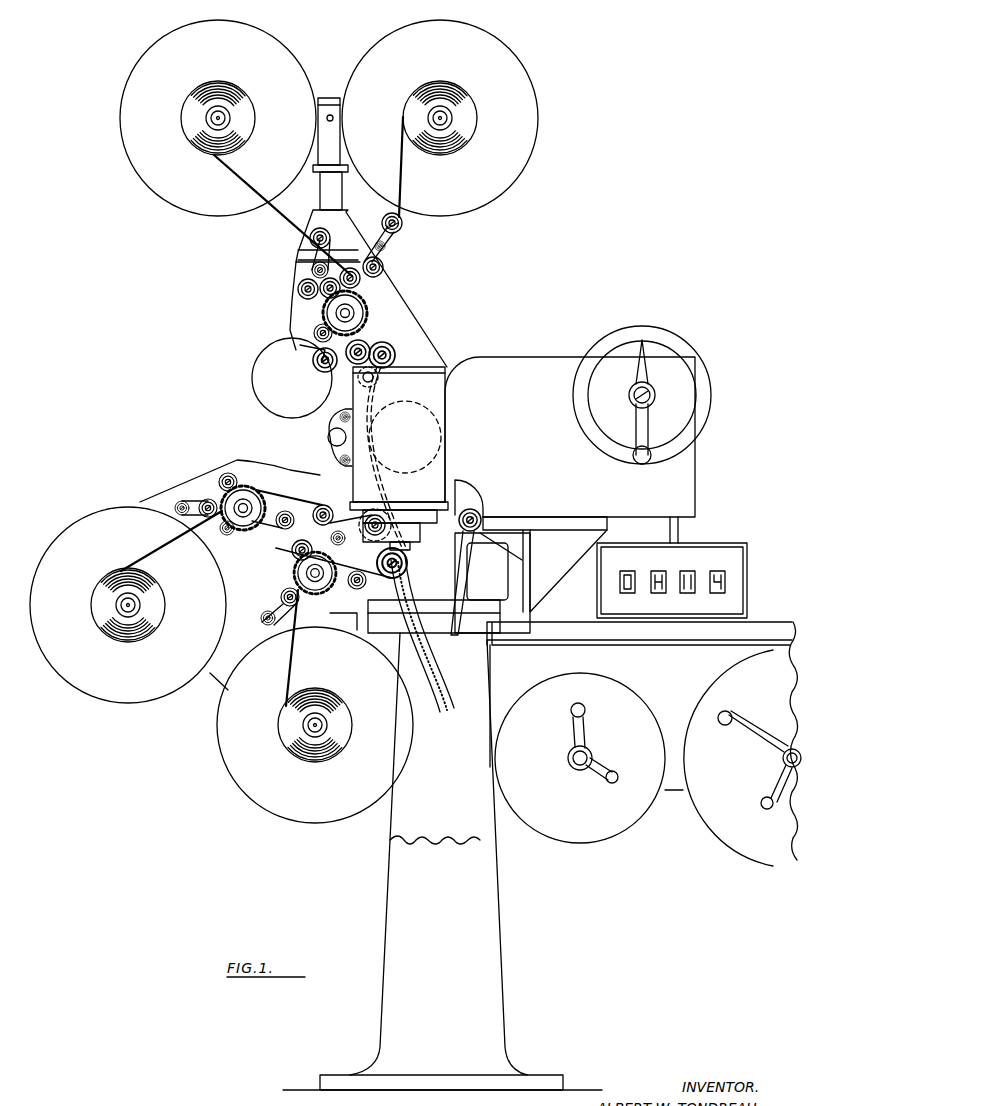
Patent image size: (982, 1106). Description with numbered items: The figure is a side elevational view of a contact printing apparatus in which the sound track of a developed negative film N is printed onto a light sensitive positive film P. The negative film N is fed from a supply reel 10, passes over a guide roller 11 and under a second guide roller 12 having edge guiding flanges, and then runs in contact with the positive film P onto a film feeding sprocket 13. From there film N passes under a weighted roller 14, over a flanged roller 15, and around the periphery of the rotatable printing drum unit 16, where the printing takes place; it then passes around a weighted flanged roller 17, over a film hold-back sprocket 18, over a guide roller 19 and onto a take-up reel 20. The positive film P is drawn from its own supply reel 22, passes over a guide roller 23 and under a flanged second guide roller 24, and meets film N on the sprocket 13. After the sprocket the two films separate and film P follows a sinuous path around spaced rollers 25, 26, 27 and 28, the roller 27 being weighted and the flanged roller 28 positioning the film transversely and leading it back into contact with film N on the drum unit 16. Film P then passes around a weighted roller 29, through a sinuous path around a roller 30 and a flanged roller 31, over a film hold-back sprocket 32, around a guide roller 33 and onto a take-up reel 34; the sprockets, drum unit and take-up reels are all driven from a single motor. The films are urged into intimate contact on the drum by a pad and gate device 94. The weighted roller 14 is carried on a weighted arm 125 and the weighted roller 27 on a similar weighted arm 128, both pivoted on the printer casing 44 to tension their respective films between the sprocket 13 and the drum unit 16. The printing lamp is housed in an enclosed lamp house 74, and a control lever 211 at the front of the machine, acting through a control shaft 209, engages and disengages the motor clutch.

The supply reel 10 is at (537, 93).
The guide roller 11 is at (403, 226).
The second guide roller 12 is at (384, 270).
The film feeding sprocket 13 is at (368, 312).
The weighted roller 14 is at (365, 342).
The roller 15 is at (397, 355).
The printing drum unit 16 is at (392, 402).
The weighted roller 17 is at (390, 578).
The film hold-back sprocket 18 is at (404, 616).
The guide roller 19 is at (282, 596).
The take-up reel 20 is at (343, 706).
The supply reel 22 is at (251, 105).
The guide roller 23 is at (309, 238).
The second guide roller 24 is at (362, 283).
The roller 25 is at (313, 333).
The roller 26 is at (297, 289).
The weighted roller 27 is at (312, 362).
The roller 28 is at (380, 377).
The weighted roller 29 is at (375, 512).
The roller 30 is at (280, 527).
The roller 31 is at (326, 505).
The film hold-back sprocket 32 is at (254, 490).
The guide roller 33 is at (206, 500).
The take-up reel 34 is at (160, 596).
The printer casing 44 is at (300, 468).
The lamp house 74 is at (465, 360).
The pad and gate device 94 is at (337, 447).
The weighted arm 125 is at (312, 352).
The weighted arm 128 is at (270, 402).
The control shaft 209 is at (482, 514).
The control lever 211 is at (466, 594).
The positive film P is at (256, 194).
The negative film N is at (404, 204).